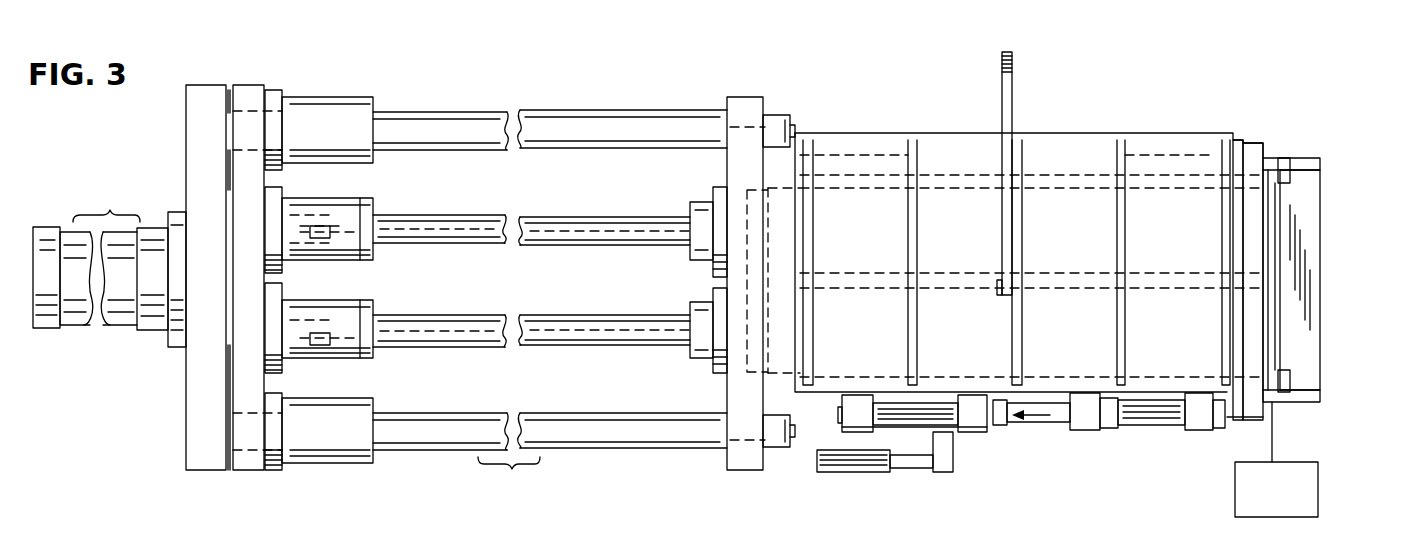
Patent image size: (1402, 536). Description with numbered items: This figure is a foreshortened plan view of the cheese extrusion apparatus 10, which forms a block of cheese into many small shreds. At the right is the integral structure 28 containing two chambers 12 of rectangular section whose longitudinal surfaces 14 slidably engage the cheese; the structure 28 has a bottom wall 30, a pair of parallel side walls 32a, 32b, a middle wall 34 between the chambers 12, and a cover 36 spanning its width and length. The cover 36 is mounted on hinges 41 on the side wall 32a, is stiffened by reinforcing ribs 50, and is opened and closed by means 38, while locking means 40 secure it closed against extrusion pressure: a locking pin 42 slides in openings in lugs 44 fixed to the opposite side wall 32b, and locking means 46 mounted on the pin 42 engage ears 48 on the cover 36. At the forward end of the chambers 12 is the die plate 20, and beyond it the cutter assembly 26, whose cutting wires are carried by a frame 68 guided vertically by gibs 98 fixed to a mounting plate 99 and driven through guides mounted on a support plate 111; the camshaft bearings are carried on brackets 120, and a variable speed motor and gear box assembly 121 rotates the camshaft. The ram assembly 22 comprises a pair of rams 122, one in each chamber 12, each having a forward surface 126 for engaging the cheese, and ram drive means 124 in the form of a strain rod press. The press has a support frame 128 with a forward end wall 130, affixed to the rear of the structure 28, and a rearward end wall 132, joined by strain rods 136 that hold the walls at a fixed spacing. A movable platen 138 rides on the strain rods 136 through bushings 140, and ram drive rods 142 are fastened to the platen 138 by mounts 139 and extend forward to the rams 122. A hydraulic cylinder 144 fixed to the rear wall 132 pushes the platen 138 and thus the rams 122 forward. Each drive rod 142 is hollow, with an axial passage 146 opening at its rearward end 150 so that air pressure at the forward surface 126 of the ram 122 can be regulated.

The extrusion apparatus 10 is at (1156, 475).
The chamber 12 is at (1200, 320).
The longitudinal surfaces 14 is at (862, 272).
The die plate 20 is at (1255, 293).
The ram assembly 22 is at (165, 378).
The cutter assembly 26 is at (1335, 240).
The integral structure 28 is at (1146, 98).
The bottom wall 30 is at (920, 220).
The side wall 32a is at (1228, 160).
The side wall 32b is at (1128, 395).
The middle wall 34 is at (1030, 288).
The cover 36 is at (846, 138).
The means for opening and closing the cover 38 is at (1018, 96).
The locking means 40 is at (1148, 440).
The hinges 41 is at (880, 155).
The locking pin 42 is at (1172, 432).
The lugs 44 is at (882, 385).
The locking means 46 is at (860, 440).
The ears 48 is at (905, 390).
The reinforcing ribs 50 is at (813, 245).
The frame 68 is at (1270, 210).
The gibs 98 is at (1278, 158).
The mounting plate 99 is at (1250, 265).
The support plate 111 is at (1300, 228).
The brackets 120 is at (1310, 170).
The variable speed motor and gear box assembly 121 is at (1295, 502).
The ram 122 is at (720, 188).
The ram drive means 124 is at (420, 462).
The forward surface 126 is at (765, 243).
The support frame 128 is at (162, 428).
The forward end wall 130 is at (745, 102).
The rearward end wall 132 is at (201, 88).
The strain rods 136 is at (628, 118).
The movable platen 138 is at (248, 90).
The mounts 139 is at (373, 208).
The bushings 140 is at (330, 100).
The ram drive rods 142 is at (445, 222).
The hydraulic cylinder 144 is at (50, 225).
The passage 146 is at (598, 208).
The rearward end 150 is at (316, 215).